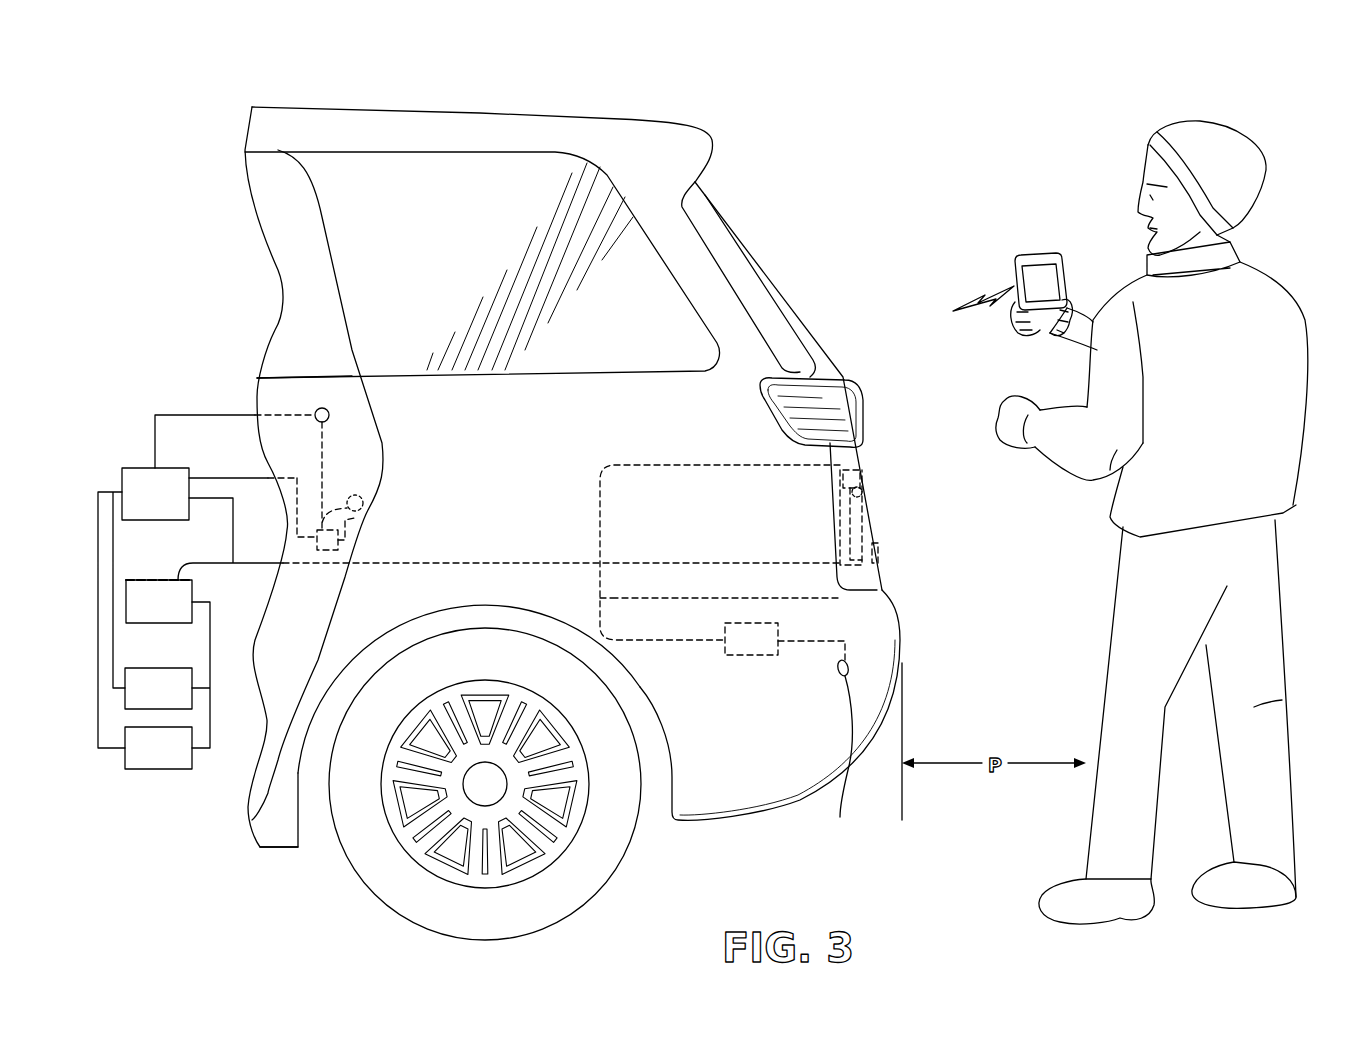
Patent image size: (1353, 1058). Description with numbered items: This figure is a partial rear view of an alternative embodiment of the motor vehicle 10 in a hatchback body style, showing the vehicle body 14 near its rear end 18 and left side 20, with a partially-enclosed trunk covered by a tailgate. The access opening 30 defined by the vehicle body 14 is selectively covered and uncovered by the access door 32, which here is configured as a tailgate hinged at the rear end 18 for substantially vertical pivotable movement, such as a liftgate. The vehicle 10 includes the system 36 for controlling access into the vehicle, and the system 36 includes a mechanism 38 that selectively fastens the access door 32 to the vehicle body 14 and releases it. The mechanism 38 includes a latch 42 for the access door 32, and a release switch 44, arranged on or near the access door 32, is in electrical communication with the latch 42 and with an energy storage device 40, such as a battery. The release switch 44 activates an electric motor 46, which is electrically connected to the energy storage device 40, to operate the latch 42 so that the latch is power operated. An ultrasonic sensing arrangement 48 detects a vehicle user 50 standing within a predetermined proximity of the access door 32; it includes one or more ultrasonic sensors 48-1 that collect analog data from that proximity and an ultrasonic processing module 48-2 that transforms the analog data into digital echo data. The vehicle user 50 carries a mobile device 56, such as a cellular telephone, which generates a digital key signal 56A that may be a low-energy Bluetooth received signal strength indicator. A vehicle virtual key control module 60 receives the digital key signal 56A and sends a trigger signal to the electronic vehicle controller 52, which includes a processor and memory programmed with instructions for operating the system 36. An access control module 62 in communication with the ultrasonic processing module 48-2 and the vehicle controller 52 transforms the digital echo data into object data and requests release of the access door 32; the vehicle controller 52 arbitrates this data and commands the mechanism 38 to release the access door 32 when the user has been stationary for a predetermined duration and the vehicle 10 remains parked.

The motor vehicle 10 is at (673, 92).
The vehicle body 14 is at (690, 272).
The rear end 18 is at (820, 312).
The left side 20 is at (280, 832).
The access opening 30 is at (290, 243).
The access door 32 is at (933, 472).
The system for controlling access 36 is at (578, 484).
The mechanism 38 is at (402, 488).
The energy storage device 40 is at (168, 664).
The latch 42 is at (366, 506).
The release switch 44 is at (322, 408).
The electric motor 46 is at (368, 508).
The ultrasonic sensing arrangement 48 is at (786, 702).
The ultrasonic sensor 48-1 is at (866, 749).
The ultrasonic processing module 48-2 is at (751, 639).
The vehicle user 50 is at (1096, 114).
The electronic vehicle controller 52 is at (206, 581).
The mobile device 56 is at (1053, 279).
The digital key signal 56A is at (972, 289).
The vehicle virtual key control module 60 is at (158, 688).
The access control module 62 is at (158, 748).